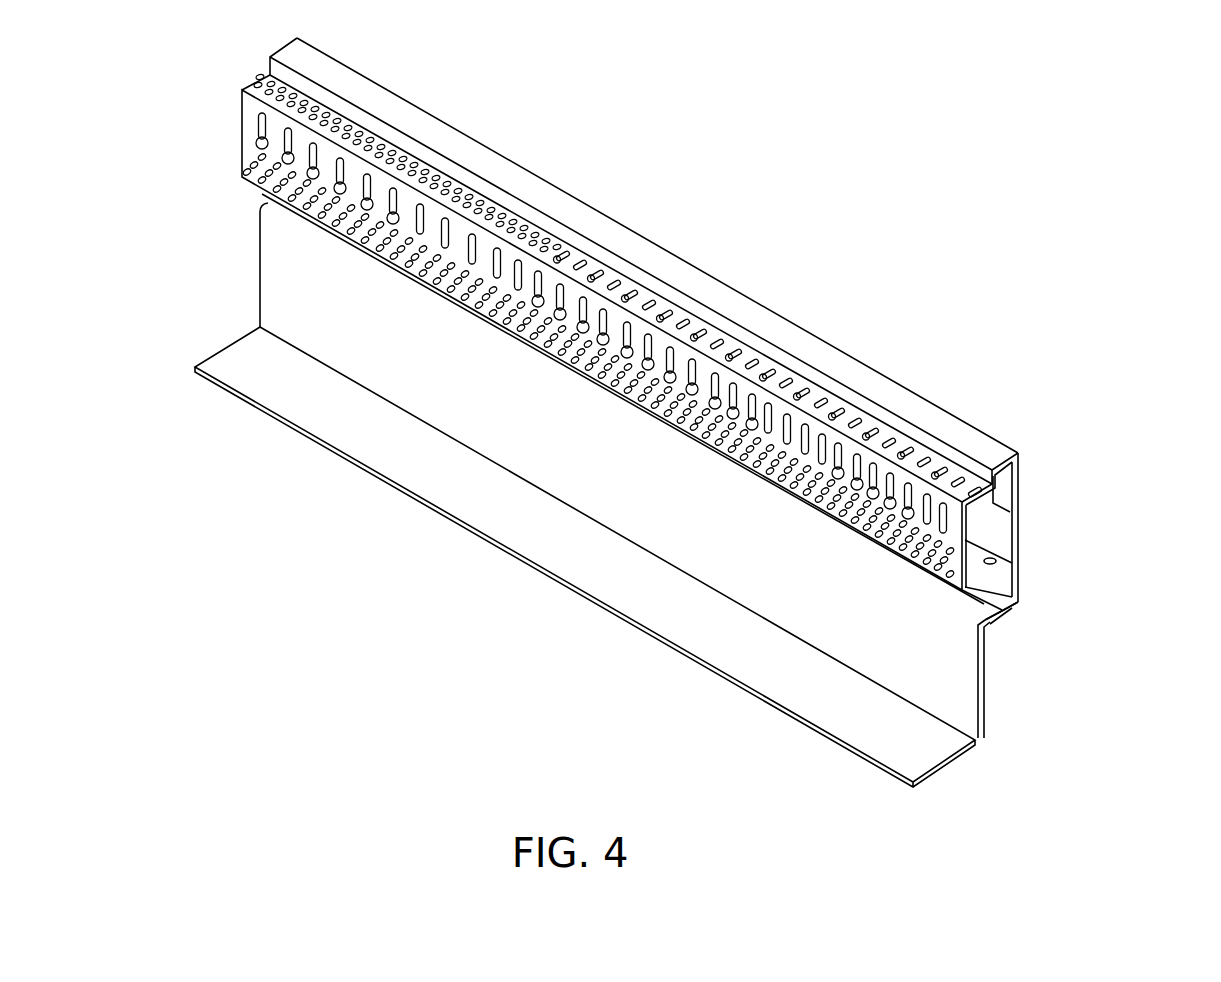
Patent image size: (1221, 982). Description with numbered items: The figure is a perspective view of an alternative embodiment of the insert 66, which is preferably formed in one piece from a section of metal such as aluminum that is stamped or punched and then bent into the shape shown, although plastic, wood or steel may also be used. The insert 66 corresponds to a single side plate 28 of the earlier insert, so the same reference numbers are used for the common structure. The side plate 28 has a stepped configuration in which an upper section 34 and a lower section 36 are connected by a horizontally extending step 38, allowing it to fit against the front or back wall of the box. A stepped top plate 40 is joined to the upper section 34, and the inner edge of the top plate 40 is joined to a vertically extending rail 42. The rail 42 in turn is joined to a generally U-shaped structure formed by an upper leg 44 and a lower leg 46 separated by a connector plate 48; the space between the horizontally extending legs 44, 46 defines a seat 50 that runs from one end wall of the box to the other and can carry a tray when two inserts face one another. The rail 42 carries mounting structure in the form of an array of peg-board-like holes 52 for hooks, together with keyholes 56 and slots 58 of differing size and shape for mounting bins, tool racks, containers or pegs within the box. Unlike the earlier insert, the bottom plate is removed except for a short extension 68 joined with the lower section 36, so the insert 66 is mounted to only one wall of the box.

The first side plate 28 is at (1057, 555).
The upper section 34 is at (1018, 503).
The lower section 36 is at (988, 682).
The step 38 is at (1005, 617).
The stepped top plate 40 is at (860, 388).
The rail 42 is at (232, 124).
The upper leg 44 is at (995, 562).
The lower leg 46 is at (1017, 605).
The connector plate 48 is at (1012, 575).
The seat 50 is at (983, 593).
The holes 52 is at (400, 153).
The keyholes 56 is at (338, 158).
The slots 58 is at (497, 250).
The insert 66 is at (902, 240).
The short extension 68 is at (957, 760).